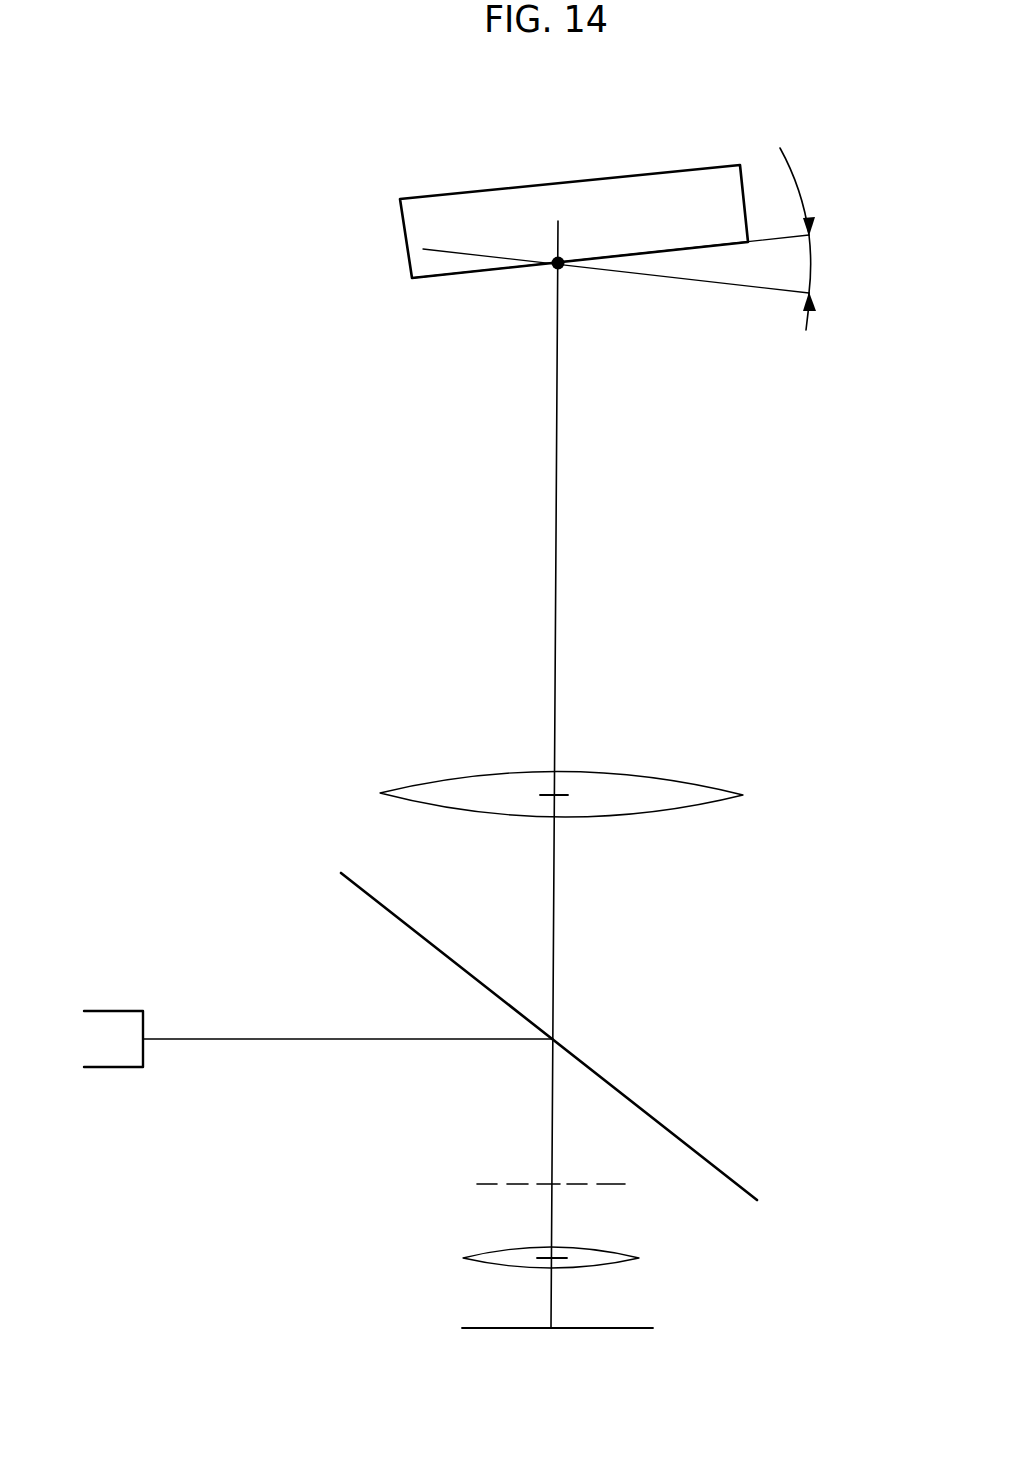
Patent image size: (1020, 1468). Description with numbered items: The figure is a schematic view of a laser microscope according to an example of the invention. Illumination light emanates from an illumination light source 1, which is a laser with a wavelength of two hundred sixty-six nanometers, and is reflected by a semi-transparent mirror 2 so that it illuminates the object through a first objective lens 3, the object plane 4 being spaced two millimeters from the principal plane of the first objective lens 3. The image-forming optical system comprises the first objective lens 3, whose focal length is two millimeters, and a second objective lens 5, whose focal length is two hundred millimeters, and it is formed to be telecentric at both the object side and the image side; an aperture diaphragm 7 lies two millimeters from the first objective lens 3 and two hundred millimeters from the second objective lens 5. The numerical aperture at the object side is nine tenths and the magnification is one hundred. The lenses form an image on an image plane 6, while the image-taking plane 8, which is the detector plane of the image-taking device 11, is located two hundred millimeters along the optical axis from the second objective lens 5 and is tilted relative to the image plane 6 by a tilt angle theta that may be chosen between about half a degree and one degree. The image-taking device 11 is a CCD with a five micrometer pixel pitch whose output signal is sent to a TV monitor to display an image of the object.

The illumination light source 1 is at (128, 1010).
The semi-transparent mirror 2 is at (610, 1084).
The first objective lens 3 is at (612, 1244).
The object plane 4 is at (637, 1327).
The second objective lens 5 is at (700, 780).
The image plane 6 is at (690, 282).
The aperture diaphragm 7 is at (503, 1183).
The image-taking plane 8 is at (690, 249).
The image-taking device 11 is at (653, 170).
The tilt angle theta is at (811, 239).